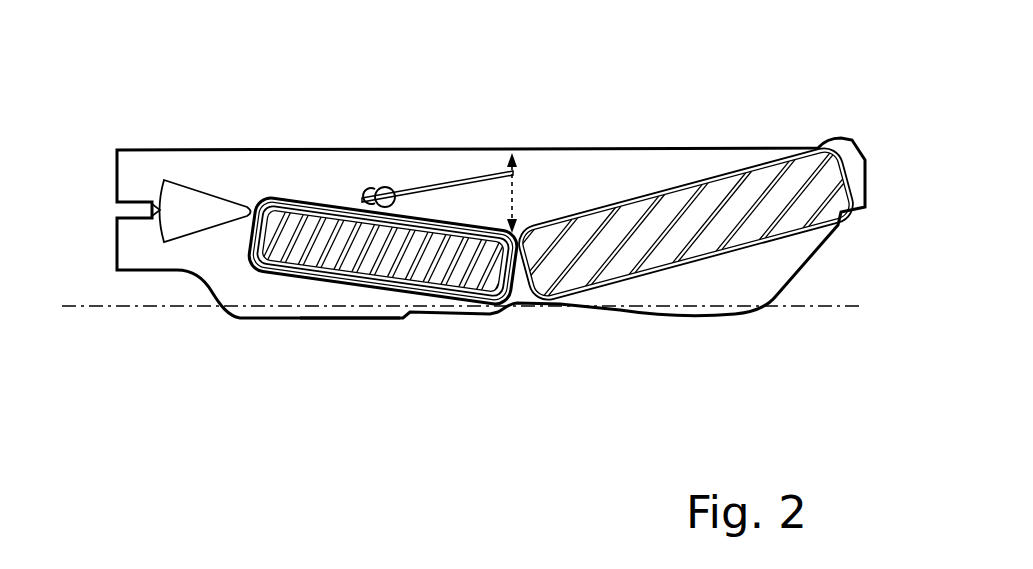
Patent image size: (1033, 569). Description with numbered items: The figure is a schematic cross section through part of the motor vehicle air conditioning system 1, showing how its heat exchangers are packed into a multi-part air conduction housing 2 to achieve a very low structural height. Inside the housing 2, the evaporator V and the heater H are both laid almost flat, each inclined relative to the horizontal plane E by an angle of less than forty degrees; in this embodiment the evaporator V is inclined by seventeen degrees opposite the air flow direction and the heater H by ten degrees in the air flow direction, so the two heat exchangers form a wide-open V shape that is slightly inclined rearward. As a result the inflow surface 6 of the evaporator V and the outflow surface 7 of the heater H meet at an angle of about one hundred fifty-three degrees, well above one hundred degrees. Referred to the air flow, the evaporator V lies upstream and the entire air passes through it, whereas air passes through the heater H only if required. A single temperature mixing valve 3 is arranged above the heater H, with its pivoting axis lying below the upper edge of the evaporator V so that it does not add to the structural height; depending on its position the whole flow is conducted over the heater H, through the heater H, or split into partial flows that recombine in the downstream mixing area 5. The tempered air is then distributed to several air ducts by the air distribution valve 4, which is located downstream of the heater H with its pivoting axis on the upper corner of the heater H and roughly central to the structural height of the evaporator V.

The motor vehicle air conditioning system 1 is at (278, 83).
The air conduction housing 2 is at (672, 147).
The temperature mixing valve 3 is at (470, 178).
The air distribution valve 4 is at (172, 180).
The mixing area 5 is at (223, 183).
The inflow surface 6 is at (725, 243).
The outflow surface 7 is at (410, 290).
The heater H is at (308, 253).
The evaporator V is at (610, 248).
The horizontal plane E is at (363, 310).